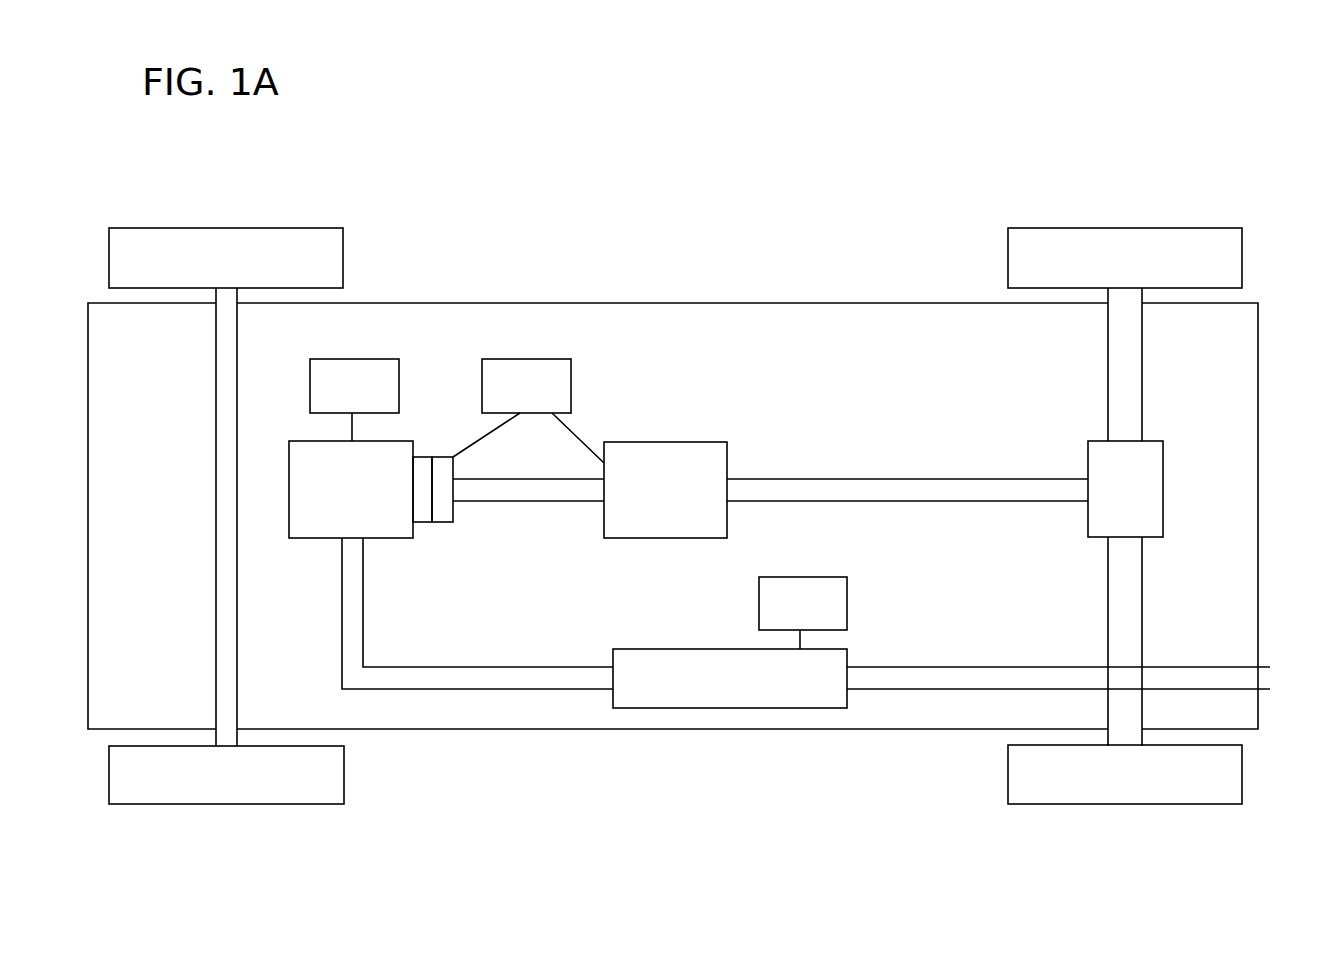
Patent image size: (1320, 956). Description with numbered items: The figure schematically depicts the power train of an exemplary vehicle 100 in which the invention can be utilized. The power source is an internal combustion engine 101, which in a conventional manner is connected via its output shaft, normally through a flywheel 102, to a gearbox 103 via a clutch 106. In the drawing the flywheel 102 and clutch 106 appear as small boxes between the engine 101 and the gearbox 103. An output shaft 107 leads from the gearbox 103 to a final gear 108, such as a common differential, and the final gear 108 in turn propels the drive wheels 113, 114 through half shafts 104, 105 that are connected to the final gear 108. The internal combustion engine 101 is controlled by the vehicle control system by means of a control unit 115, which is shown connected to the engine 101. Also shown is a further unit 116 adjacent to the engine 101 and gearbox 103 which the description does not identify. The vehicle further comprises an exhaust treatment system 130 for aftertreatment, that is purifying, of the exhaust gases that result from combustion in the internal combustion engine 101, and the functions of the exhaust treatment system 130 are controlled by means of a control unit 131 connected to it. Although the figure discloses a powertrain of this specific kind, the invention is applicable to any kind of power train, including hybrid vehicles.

The vehicle 100 is at (578, 138).
The internal combustion engine 101 is at (325, 528).
The flywheel 102 is at (430, 521).
The gearbox 103 is at (667, 453).
The half shaft 104 is at (1130, 362).
The half shaft 105 is at (1135, 648).
The clutch 106 is at (444, 512).
The output shaft 107 is at (1003, 495).
The final gear 108 is at (1157, 483).
The drive wheel 113 is at (1237, 248).
The drive wheel 114 is at (1237, 776).
The control unit 115 is at (354, 395).
The battery 116 is at (548, 397).
The exhaust treatment system 130 is at (715, 662).
The control unit 131 is at (803, 613).